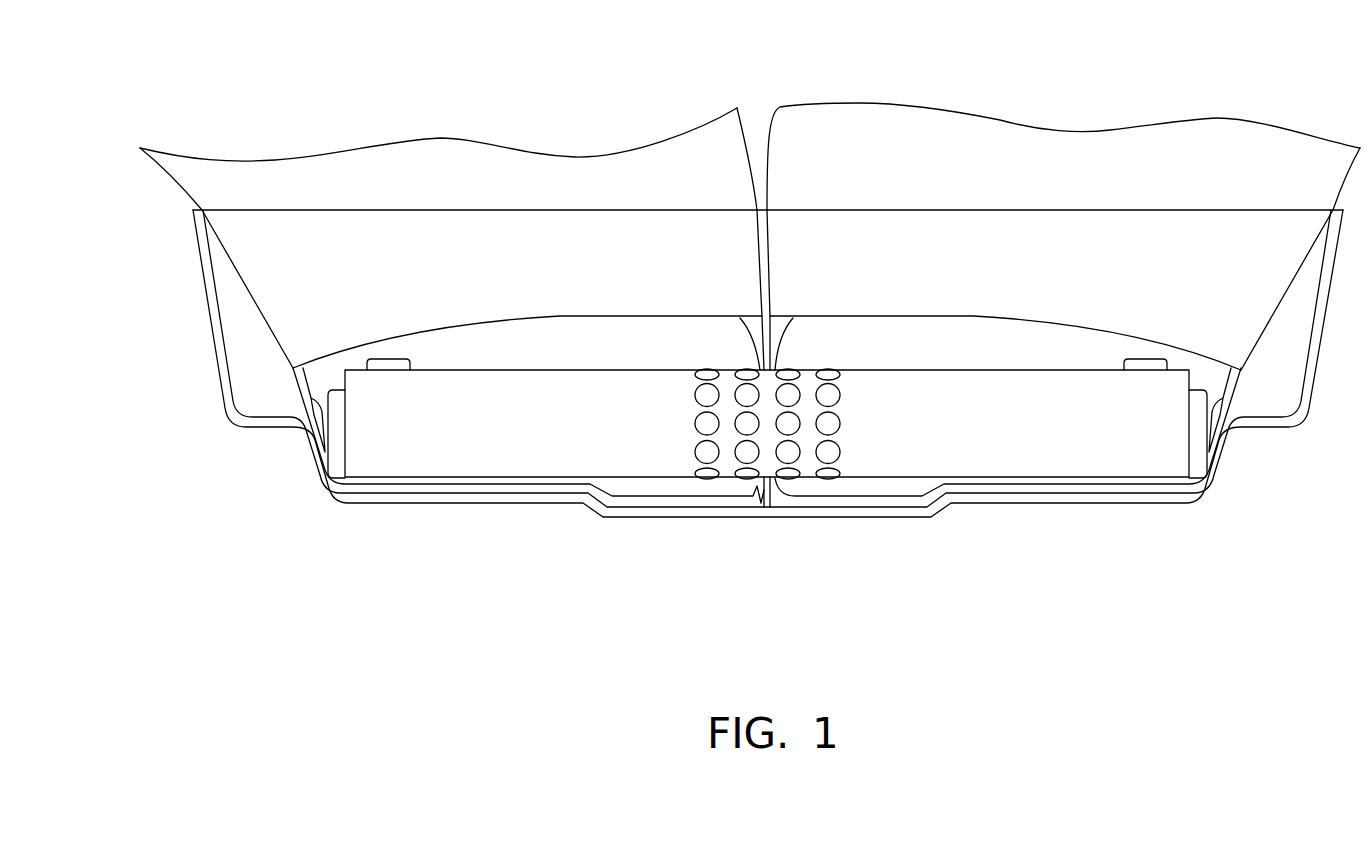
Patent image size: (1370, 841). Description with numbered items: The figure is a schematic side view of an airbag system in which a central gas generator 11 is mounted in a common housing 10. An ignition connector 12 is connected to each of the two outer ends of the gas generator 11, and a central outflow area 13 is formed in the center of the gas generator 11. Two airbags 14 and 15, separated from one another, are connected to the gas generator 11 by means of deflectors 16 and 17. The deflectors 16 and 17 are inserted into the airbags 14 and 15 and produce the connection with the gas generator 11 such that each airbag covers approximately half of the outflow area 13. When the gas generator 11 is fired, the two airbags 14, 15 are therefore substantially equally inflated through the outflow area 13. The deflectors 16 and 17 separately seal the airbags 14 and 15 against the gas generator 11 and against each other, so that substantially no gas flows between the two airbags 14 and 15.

The common housing 10 is at (208, 323).
The central gas generator 11 is at (485, 443).
The ignition connector 12 is at (340, 440).
The central outflow area 13 is at (744, 453).
The airbag 14 is at (475, 140).
The airbag 15 is at (980, 112).
The deflector 16 is at (703, 485).
The deflector 17 is at (885, 485).